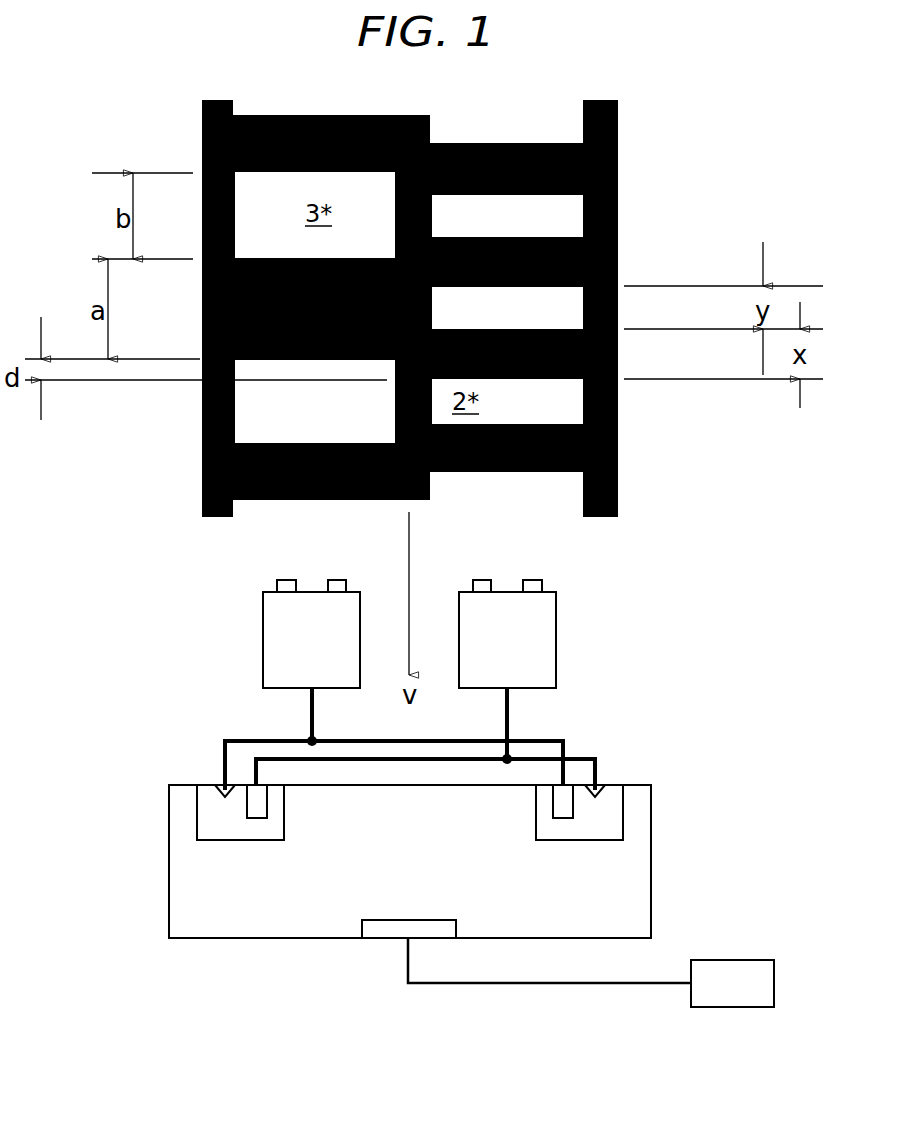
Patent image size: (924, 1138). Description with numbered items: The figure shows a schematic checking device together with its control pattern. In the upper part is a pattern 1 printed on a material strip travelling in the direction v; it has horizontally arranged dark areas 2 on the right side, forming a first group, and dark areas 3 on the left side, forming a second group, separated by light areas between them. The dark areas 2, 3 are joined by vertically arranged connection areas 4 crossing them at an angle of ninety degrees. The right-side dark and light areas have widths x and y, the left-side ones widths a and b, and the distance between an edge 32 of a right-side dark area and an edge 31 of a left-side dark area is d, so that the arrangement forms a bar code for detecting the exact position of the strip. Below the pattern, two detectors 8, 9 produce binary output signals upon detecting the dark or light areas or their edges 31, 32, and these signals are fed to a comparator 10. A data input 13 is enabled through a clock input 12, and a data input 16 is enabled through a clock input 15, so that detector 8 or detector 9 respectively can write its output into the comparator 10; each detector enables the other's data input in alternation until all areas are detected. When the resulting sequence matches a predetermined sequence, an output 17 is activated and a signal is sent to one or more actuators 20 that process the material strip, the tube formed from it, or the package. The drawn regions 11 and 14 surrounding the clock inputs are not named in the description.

The pattern 1 is at (488, 237).
The dark areas 2 is at (557, 276).
The dark areas 3 is at (228, 341).
The connection areas 4 is at (530, 461).
The edge 31 is at (314, 361).
The edge 32 is at (501, 380).
The detector 8 is at (290, 623).
The detector 9 is at (523, 610).
The comparator 10 is at (225, 900).
The well region 11 is at (210, 830).
The clock input 12 is at (246, 812).
The data input 13 is at (222, 784).
The well region 14 is at (610, 825).
The clock input 15 is at (573, 806).
The data input 16 is at (600, 777).
The output 17 is at (406, 930).
The actuators 20 is at (724, 968).